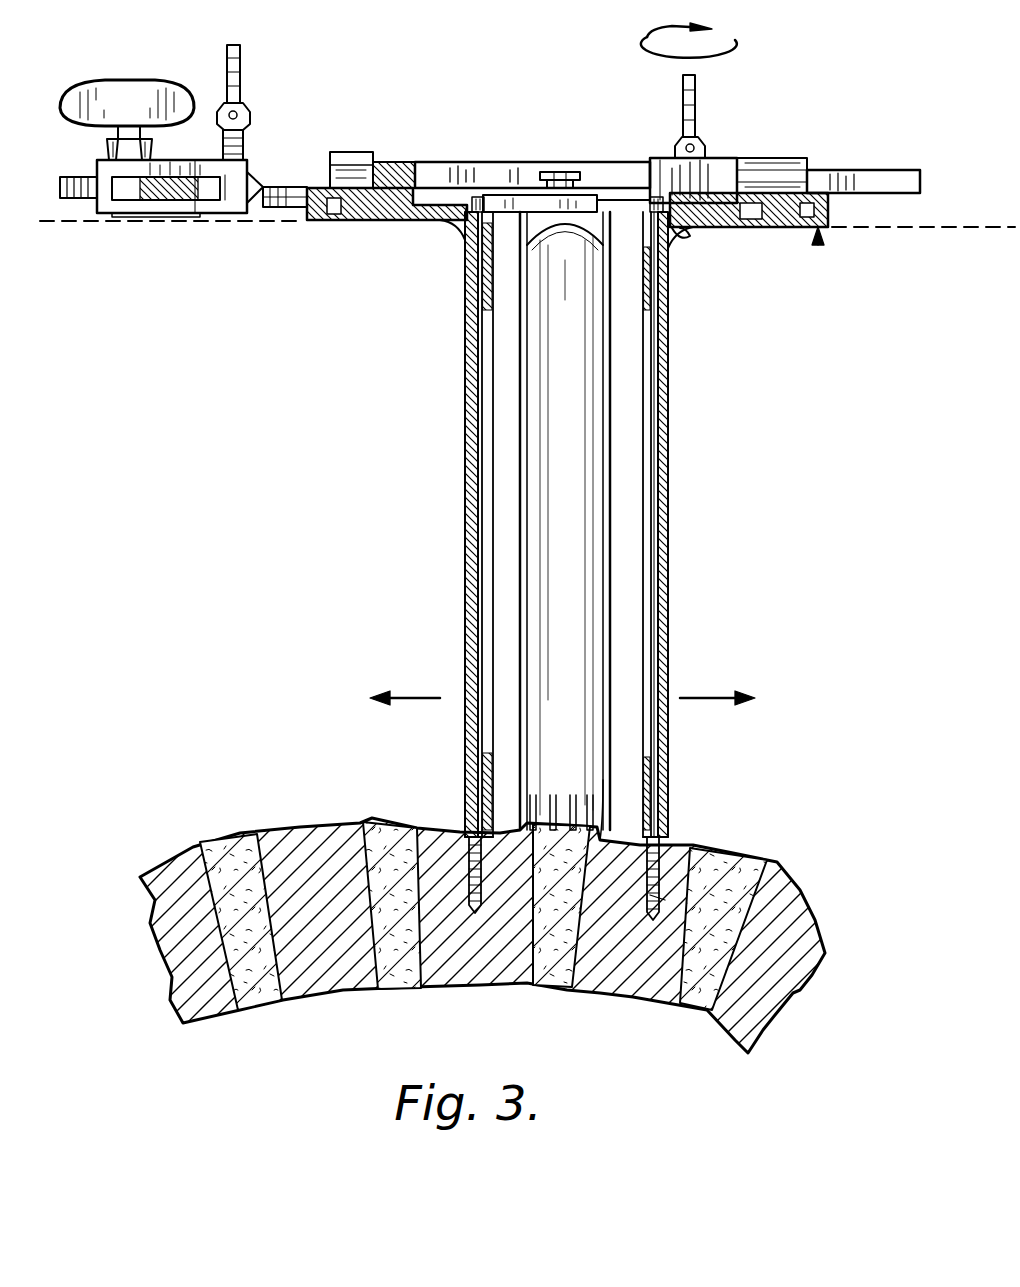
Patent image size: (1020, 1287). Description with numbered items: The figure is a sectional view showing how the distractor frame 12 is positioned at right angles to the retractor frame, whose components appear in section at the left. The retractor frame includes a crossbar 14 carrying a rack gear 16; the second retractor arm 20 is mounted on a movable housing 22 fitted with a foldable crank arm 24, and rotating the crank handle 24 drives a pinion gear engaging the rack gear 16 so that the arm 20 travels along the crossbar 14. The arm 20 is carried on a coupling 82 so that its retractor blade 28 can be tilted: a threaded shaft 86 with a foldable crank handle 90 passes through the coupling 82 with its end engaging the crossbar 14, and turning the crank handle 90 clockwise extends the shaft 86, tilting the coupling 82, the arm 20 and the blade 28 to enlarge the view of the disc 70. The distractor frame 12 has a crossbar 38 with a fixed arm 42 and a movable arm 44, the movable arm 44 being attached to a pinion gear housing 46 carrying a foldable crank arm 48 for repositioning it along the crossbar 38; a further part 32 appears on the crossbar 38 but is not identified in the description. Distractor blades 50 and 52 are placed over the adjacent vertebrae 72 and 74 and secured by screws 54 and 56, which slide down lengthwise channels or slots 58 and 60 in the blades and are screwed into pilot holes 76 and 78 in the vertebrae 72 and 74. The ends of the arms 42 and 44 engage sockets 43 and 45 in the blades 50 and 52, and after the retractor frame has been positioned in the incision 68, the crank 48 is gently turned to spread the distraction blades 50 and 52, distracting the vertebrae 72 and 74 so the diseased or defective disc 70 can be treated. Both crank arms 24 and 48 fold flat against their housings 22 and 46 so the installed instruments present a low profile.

The distractor frame 12 is at (818, 250).
The crossbar 14 is at (170, 215).
The rack gear 16 is at (82, 177).
The second retractor arm 20 is at (280, 187).
The movable housing 22 is at (195, 160).
The foldable crank arm 24 is at (122, 88).
The retractor blade 28 is at (588, 455).
The nut 32 is at (575, 172).
The crossbar 38 is at (475, 162).
The fixed arm 42 is at (358, 220).
The socket 43 is at (380, 162).
The movable arm 44 is at (778, 227).
The socket 45 is at (828, 170).
The pinion gear housing 46 is at (715, 158).
The foldable crank arm 48 is at (695, 108).
The distractor blade 50 is at (466, 435).
The distractor blade 52 is at (668, 598).
The screw 54 is at (470, 800).
The screw 56 is at (668, 800).
The lengthwise slot 58 is at (470, 292).
The lengthwise slot 60 is at (655, 350).
The incision 68 is at (686, 236).
The disc 70 is at (553, 988).
The vertebra 72 is at (460, 988).
The vertebra 74 is at (663, 995).
The pilot hole 76 is at (398, 845).
The pilot hole 78 is at (665, 900).
The coupling 82 is at (232, 213).
The threaded shaft 86 is at (243, 140).
The foldable crank handle 90 is at (240, 72).